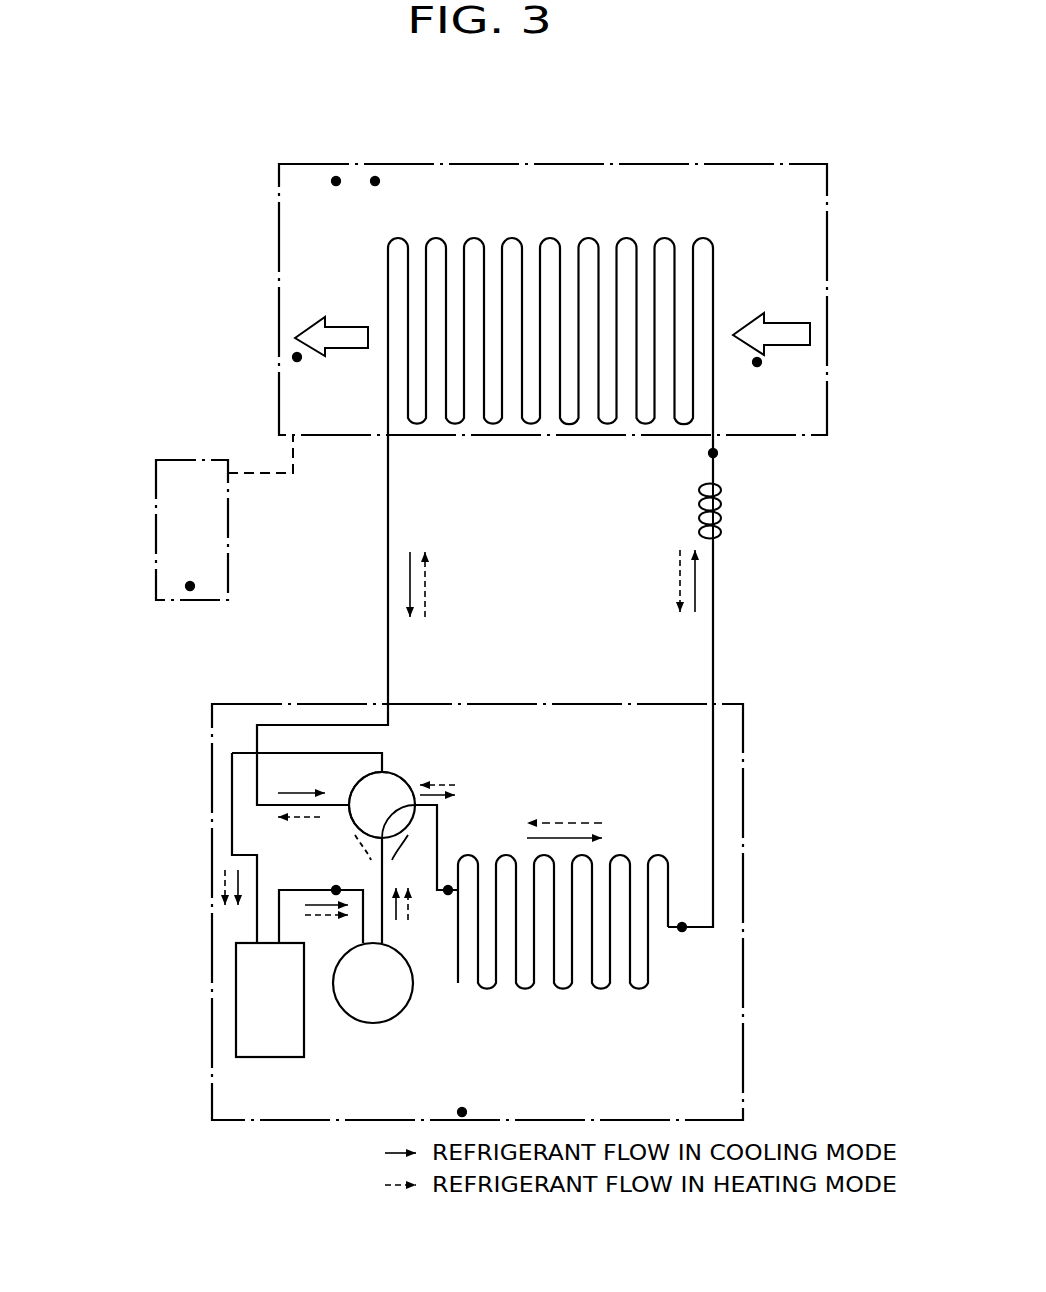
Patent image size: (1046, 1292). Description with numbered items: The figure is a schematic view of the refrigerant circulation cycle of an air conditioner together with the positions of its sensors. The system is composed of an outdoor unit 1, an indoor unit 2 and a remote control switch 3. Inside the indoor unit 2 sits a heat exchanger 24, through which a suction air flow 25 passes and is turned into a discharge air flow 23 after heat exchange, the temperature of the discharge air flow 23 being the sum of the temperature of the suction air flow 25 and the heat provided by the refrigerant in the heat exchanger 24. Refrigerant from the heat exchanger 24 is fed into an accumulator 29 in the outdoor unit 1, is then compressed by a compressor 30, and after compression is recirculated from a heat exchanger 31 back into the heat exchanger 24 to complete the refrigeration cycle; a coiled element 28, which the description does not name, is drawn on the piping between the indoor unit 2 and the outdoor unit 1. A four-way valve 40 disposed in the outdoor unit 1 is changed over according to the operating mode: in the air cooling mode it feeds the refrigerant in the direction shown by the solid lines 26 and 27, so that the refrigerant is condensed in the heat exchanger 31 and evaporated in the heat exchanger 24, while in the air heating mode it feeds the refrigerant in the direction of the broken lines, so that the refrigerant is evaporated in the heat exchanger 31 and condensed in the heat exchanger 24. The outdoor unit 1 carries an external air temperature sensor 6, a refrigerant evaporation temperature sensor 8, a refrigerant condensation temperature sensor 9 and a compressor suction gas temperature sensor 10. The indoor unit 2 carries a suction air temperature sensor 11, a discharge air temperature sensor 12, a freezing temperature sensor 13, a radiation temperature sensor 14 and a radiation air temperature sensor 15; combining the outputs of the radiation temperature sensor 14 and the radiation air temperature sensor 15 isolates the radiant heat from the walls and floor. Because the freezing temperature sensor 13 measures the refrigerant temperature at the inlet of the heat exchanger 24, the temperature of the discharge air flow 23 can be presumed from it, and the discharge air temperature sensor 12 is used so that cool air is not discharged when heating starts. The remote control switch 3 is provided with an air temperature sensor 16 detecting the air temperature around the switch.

The outdoor unit 1 is at (745, 745).
The indoor unit 2 is at (768, 163).
The remote control switch 3 is at (205, 458).
The external air temperature sensor 6 is at (466, 1108).
The refrigerant evaporation temperature sensor 8 is at (683, 932).
The refrigerant condensation temperature sensor 9 is at (448, 895).
The compressor suction gas temperature sensor 10 is at (336, 885).
The suction air temperature sensor 11 is at (758, 367).
The discharge air temperature sensor 12 is at (298, 362).
The freezing temperature sensor 13 is at (718, 452).
The radiation temperature sensor 14 is at (336, 186).
The radiation air temperature sensor 15 is at (375, 186).
The air temperature sensor 16 is at (191, 581).
The discharge air flow 23 is at (353, 326).
The heat exchanger 24 is at (585, 238).
The suction air flow 25 is at (799, 320).
The solid line 26 is at (694, 580).
The solid line 27 is at (412, 580).
The expansion device 28 is at (724, 512).
The accumulator 29 is at (286, 1057).
The compressor 30 is at (395, 1018).
The heat exchanger 31 is at (590, 993).
The four-way valve 40 is at (410, 782).